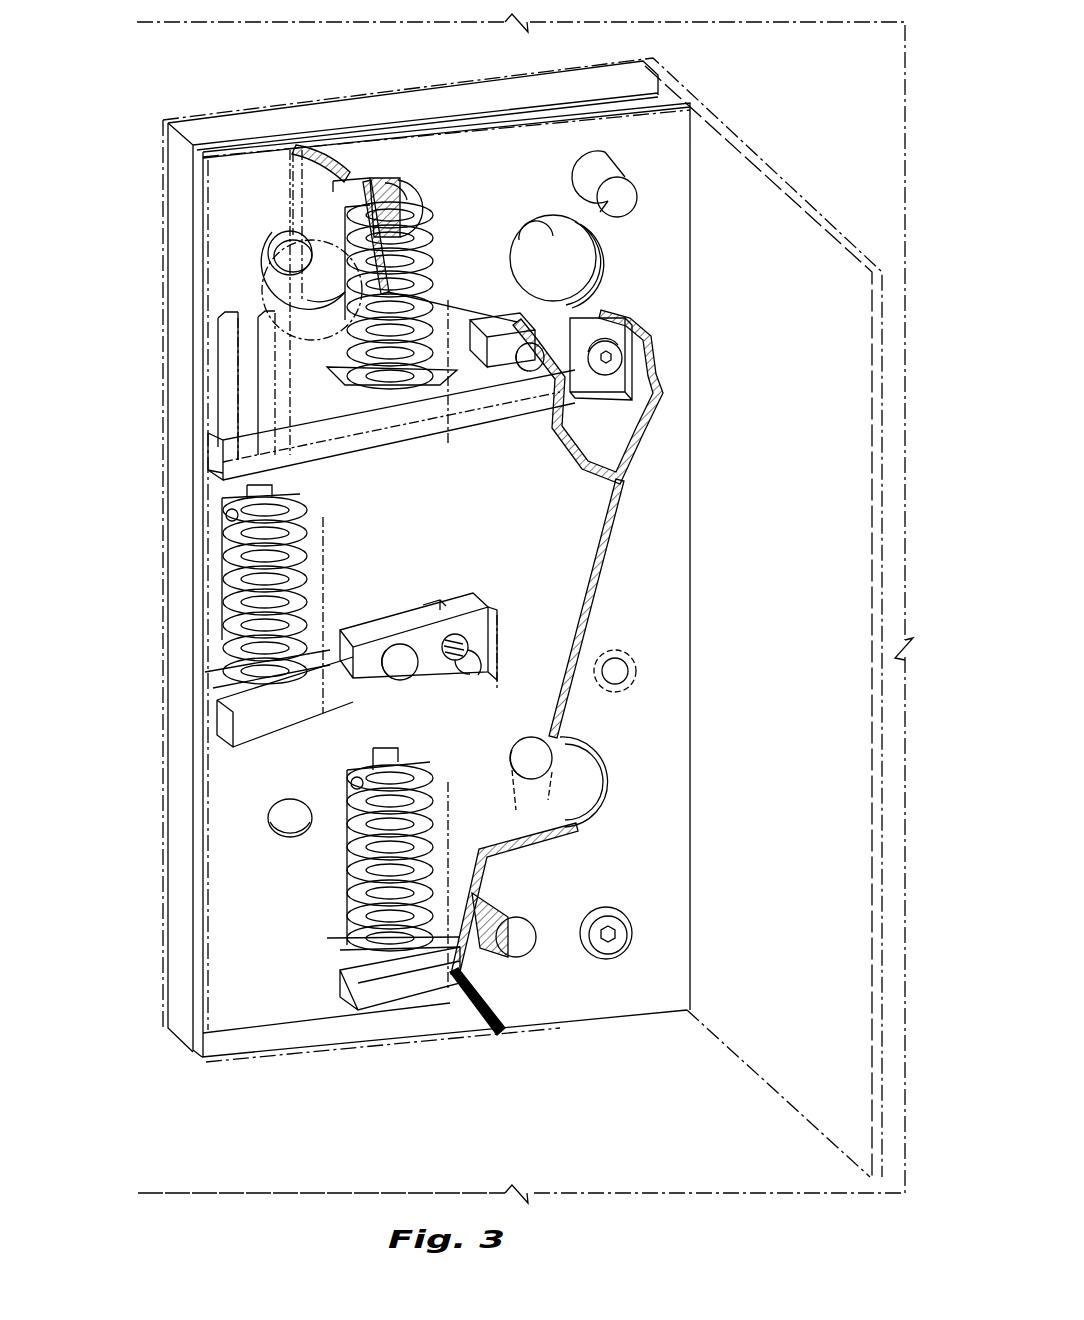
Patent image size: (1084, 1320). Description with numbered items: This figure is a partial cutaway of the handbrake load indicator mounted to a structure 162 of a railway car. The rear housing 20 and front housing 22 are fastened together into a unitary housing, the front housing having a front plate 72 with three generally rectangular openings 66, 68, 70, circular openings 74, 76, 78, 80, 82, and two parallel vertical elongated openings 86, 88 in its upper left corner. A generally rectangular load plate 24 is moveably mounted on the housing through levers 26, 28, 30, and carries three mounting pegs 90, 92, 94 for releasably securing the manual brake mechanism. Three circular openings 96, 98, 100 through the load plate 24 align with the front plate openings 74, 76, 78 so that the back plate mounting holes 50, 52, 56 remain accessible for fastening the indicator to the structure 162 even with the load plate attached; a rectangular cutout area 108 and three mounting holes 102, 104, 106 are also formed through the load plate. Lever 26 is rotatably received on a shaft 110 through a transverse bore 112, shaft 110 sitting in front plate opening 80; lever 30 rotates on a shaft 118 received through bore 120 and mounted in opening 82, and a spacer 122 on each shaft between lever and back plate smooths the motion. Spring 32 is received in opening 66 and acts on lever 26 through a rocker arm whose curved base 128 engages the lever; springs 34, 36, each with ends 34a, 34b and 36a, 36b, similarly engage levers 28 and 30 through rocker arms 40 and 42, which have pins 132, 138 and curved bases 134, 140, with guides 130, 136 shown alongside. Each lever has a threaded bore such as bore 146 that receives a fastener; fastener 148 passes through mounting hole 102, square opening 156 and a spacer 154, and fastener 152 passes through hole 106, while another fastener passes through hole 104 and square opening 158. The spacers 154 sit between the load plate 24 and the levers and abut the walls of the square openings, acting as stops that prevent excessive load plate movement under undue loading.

The rear housing 20 is at (240, 132).
The front housing 22 is at (588, 446).
The load plate 24 is at (483, 196).
The lever 26 is at (463, 398).
The lever 28 is at (432, 972).
The lever 30 is at (343, 705).
The spring 32 is at (415, 300).
The spring 34 is at (345, 855).
The lower spring upper end 34a is at (395, 742).
The lower spring lower end 34b is at (340, 950).
The spring 36 is at (242, 585).
The middle spring upper end 36a is at (230, 512).
The middle spring lower end 36b is at (272, 688).
The rocker arm 40 is at (345, 943).
The rocker arm 42 is at (228, 668).
The circular opening 50 is at (280, 235).
The circular opening 52 is at (543, 240).
The circular opening 56 is at (543, 770).
The rectangular opening 66 is at (445, 458).
The rectangular opening 68 is at (348, 560).
The rectangular opening 70 is at (452, 812).
The front plate 72 is at (313, 178).
The circular opening 74 is at (295, 325).
The circular opening 76 is at (600, 263).
The circular opening 78 is at (530, 838).
The circular opening 80 is at (550, 388).
The circular opening 82 is at (432, 625).
The vertical elongated opening 86 is at (220, 328).
The vertical elongated opening 88 is at (265, 375).
The mounting peg 90 is at (425, 222).
The mounting peg 92 is at (622, 190).
The mounting peg 94 is at (512, 938).
The circular opening 96 is at (298, 318).
The circular opening 98 is at (602, 283).
The circular opening 100 is at (608, 788).
The mounting hole 102 is at (625, 352).
The mounting hole 104 is at (482, 680).
The mounting hole 106 is at (600, 912).
The rectangular cutout area 108 is at (298, 412).
The shaft 110 is at (532, 362).
The bore 112 is at (527, 370).
The shaft 118 is at (400, 648).
The bore 120 is at (387, 682).
The spacer 122 is at (502, 318).
The curved base 128 is at (398, 385).
The spring seat 130 is at (415, 773).
The pin 132 is at (357, 1000).
The curved base 134 is at (397, 990).
The guide 136 is at (335, 542).
The pin 138 is at (282, 680).
The curved base 140 is at (293, 688).
The threaded bore 146 is at (465, 640).
The fastener 148 is at (630, 362).
The fastener 152 is at (617, 910).
The spacer 154 is at (612, 332).
The square opening 156 is at (600, 396).
The square opening 158 is at (500, 640).
The structure 162 is at (742, 143).